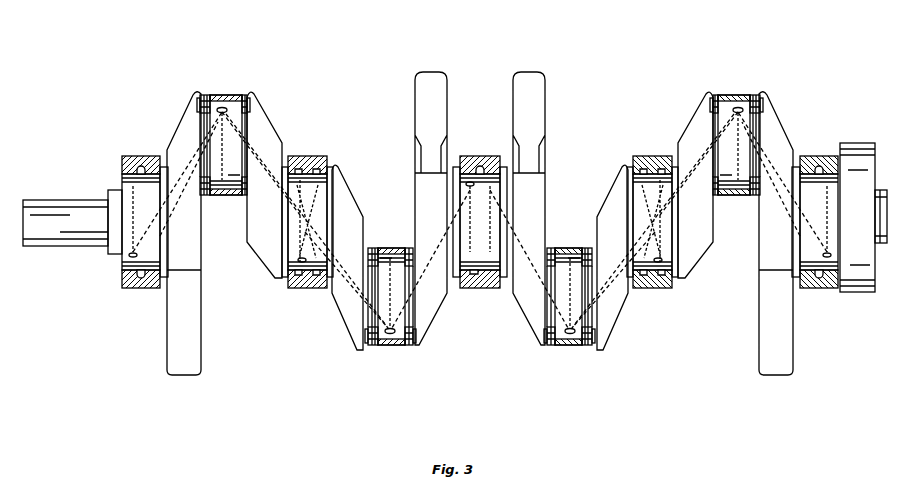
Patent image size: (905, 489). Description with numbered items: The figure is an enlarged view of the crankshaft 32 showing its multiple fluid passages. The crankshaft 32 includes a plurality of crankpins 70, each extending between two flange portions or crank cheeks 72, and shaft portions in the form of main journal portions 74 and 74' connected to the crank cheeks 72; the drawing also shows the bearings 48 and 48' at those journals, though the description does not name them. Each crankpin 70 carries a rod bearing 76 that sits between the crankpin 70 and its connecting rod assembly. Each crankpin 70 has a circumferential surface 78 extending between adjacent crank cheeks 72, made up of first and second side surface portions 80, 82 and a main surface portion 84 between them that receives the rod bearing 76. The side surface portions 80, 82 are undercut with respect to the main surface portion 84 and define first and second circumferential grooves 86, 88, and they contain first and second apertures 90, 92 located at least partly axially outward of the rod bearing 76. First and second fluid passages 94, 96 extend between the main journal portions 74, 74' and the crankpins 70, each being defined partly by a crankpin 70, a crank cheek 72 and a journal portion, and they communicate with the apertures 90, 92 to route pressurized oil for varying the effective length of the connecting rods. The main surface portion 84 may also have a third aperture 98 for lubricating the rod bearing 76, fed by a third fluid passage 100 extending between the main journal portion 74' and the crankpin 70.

The crankshaft 32 is at (46, 263).
The main bearing 48 is at (482, 200).
The intermediate main bearing 48' is at (480, 200).
The crankpin 70 is at (215, 95).
The crank cheek 72 is at (182, 122).
The main journal portion 74 is at (463, 220).
The main journal portion 74' is at (480, 195).
The rod bearing 76 is at (241, 95).
The circumferential surface 78 is at (220, 198).
The first side surface portion 80 is at (203, 198).
The second side surface portion 82 is at (244, 198).
The main surface portion 84 is at (229, 198).
The first circumferential groove 86 is at (204, 95).
The second circumferential groove 88 is at (245, 95).
The first aperture 90 is at (199, 96).
The second aperture 92 is at (249, 96).
The first fluid passage 94 is at (228, 188).
The second fluid passage 96 is at (262, 152).
The third aperture 98 is at (223, 108).
The third fluid passage 100 is at (262, 128).